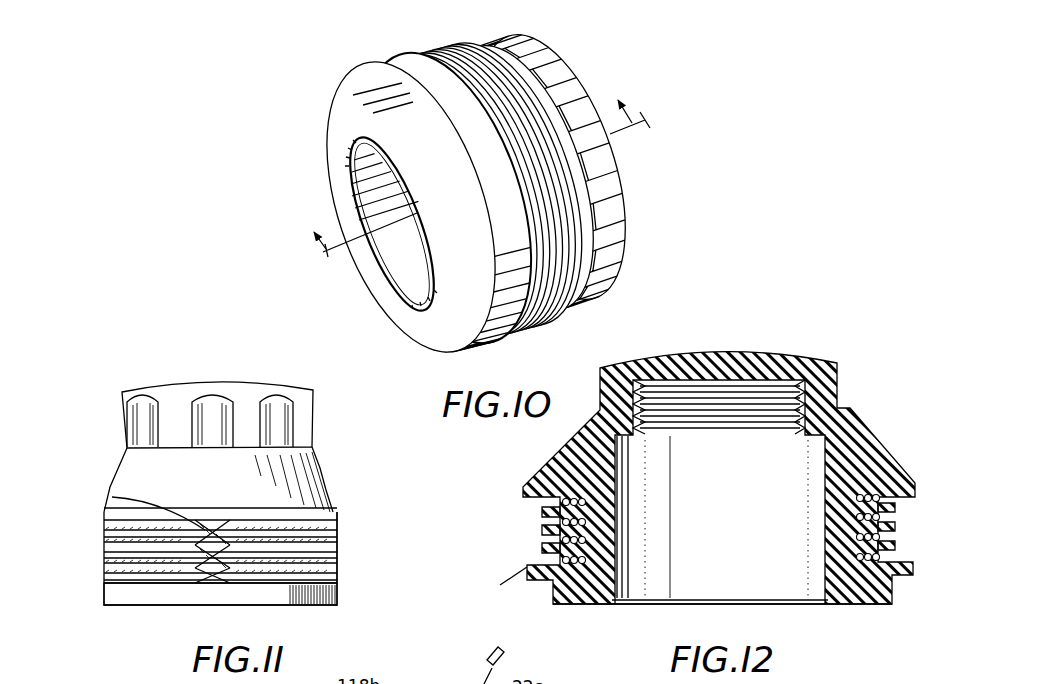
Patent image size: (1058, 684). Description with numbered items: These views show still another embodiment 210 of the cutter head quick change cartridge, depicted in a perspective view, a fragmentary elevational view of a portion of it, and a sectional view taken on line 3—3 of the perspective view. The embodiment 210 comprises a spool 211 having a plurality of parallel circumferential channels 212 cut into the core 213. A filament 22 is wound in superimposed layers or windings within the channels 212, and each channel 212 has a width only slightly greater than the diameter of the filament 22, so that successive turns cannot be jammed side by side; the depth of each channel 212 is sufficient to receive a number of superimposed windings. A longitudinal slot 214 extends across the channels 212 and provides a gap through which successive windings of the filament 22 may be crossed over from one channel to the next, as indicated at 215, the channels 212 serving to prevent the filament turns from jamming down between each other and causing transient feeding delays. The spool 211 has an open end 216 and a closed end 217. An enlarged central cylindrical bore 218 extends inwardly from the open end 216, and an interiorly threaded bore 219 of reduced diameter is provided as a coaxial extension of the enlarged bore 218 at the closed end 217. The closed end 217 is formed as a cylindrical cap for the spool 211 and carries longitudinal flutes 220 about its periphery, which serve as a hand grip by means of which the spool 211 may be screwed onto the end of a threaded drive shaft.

In FIG. 10, the cutter head quick change cartridge embodiment 210 is at (488, 186).
In FIG. 11, the cutter head quick change cartridge embodiment 210 is at (227, 488).
In FIG. 12, the cutter head quick change cartridge embodiment 210 is at (736, 480).
In FIG. 10, the spool 211 is at (360, 77).
In FIG. 11, the spool 211 is at (345, 584).
In FIG. 12, the channels 212 is at (880, 557).
In FIG. 12, the core 213 is at (605, 517).
In FIG. 11, the longitudinal slot 214 is at (212, 575).
In FIG. 11, the filament cross-over 215 is at (112, 497).
In FIG. 10, the open end 216 is at (410, 313).
In FIG. 12, the open end 216 is at (862, 603).
In FIG. 10, the closed end 217 is at (567, 172).
In FIG. 12, the closed end 217 is at (820, 360).
In FIG. 10, the enlarged central cylindrical bore 218 is at (360, 175).
In FIG. 12, the enlarged central cylindrical bore 218 is at (738, 580).
In FIG. 12, the interiorly threaded bore 219 is at (717, 428).
In FIG. 10, the longitudinal flutes 220 is at (622, 233).
In FIG. 11, the longitudinal flutes 220 is at (280, 428).
In FIG. 11, the filament 22 is at (340, 558).
In FIG. 10, the section line 3 is at (470, 165).